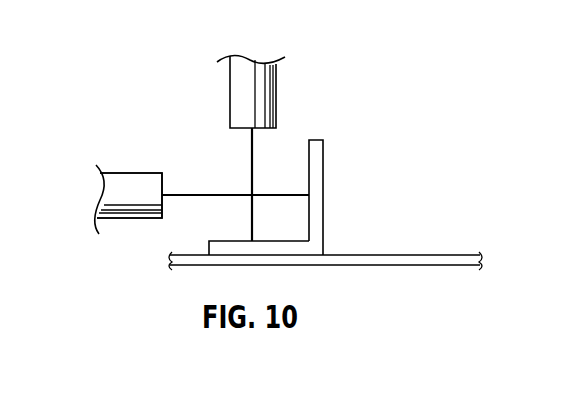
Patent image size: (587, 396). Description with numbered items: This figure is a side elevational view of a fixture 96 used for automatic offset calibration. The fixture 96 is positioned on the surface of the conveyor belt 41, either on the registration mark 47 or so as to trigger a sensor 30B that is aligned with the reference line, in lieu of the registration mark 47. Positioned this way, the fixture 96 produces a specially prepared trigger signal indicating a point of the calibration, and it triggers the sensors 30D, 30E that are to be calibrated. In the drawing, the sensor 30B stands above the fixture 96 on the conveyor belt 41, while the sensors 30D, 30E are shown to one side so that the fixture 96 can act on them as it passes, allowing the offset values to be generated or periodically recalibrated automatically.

The sensor 30B is at (276, 87).
The sensor 30D is at (132, 222).
The sensor 30E is at (129, 195).
The registration mark 47 is at (343, 242).
The fixture 96 is at (326, 157).
The conveyor belt 41 is at (417, 255).